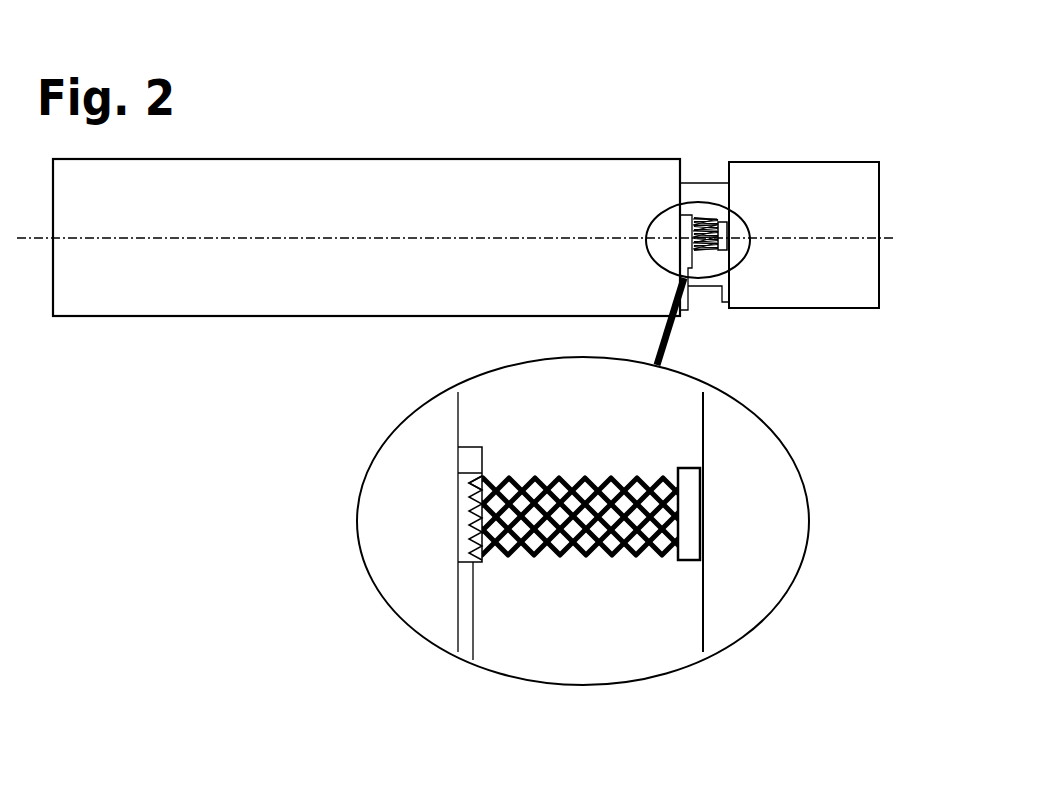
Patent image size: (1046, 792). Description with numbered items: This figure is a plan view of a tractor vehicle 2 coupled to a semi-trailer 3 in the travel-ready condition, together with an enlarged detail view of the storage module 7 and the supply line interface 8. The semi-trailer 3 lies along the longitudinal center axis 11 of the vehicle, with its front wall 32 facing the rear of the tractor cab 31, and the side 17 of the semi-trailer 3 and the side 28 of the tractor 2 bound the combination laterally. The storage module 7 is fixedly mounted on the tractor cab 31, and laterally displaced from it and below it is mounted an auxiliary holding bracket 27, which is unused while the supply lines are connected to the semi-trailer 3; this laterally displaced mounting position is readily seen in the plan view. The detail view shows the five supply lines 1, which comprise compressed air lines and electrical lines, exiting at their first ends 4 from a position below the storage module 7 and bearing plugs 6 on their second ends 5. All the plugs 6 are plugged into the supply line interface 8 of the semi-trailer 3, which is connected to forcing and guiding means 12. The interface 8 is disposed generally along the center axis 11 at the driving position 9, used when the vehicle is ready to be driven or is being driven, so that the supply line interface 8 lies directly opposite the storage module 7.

The supply lines 1 is at (624, 550).
The tractor vehicle 2 is at (783, 150).
The semi-trailer 3 is at (191, 209).
The first ends 4 is at (676, 478).
The second ends 5 is at (484, 478).
The plugs 6 is at (470, 488).
The storage module 7 is at (688, 543).
The supply line interface 8 is at (435, 540).
The driving position 9 is at (463, 539).
The longitudinal center axis 11 is at (42, 242).
The forcing and guiding means 12 is at (496, 603).
The side of the semi-trailer 17 is at (190, 321).
The auxiliary holding bracket 27 is at (722, 303).
The side of the tractor 28 is at (848, 311).
The tractor cab 31 is at (848, 207).
The front wall 32 is at (682, 165).